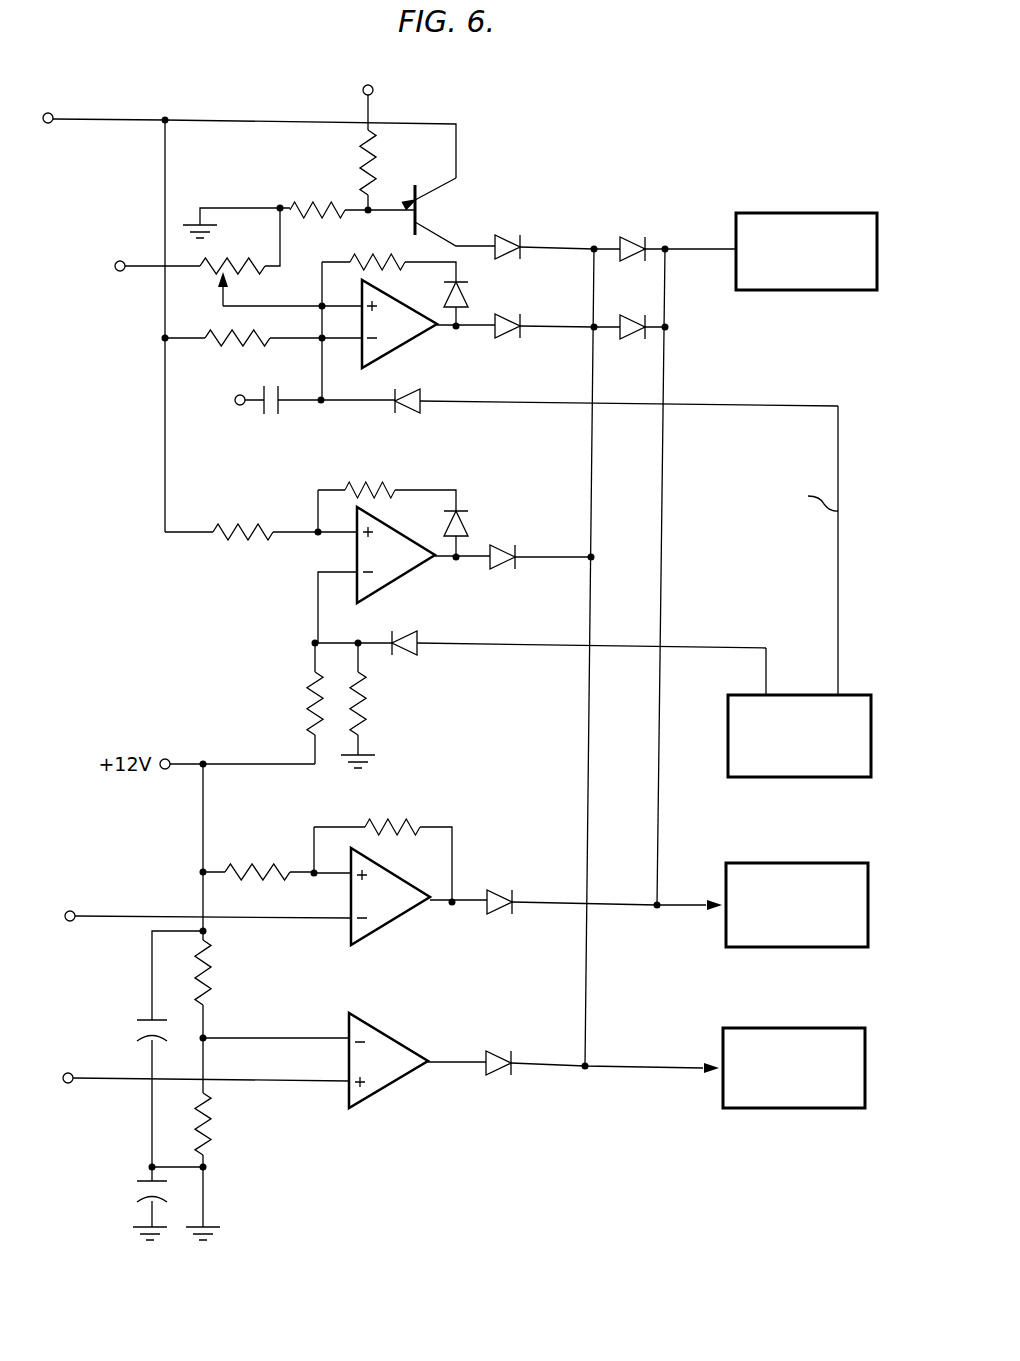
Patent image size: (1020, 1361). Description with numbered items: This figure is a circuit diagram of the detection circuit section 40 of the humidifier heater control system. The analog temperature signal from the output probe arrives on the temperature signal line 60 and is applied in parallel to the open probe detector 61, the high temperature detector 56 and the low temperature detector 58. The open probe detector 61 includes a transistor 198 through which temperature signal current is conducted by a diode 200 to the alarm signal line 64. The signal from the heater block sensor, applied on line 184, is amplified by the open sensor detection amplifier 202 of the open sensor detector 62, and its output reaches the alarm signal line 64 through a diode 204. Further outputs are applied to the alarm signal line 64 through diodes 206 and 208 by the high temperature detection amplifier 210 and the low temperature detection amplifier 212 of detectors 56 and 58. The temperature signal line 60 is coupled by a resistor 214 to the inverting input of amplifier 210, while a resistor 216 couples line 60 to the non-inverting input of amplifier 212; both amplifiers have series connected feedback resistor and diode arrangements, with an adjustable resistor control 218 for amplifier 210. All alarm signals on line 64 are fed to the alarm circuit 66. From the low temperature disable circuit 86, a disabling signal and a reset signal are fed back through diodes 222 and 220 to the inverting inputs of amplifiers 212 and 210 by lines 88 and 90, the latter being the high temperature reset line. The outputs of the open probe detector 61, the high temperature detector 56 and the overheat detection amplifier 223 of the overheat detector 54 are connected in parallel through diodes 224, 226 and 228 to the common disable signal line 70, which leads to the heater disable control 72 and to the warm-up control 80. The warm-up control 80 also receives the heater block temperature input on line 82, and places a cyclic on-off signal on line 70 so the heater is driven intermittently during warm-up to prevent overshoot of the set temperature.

The detection circuit section 40 is at (660, 133).
The overheat detector 54 is at (476, 820).
The high temperature detector 56 is at (463, 364).
The low temperature detector 58 is at (288, 599).
The temperature signal line 60 is at (138, 118).
The open probe detector 61 is at (492, 186).
The open sensor detector 62 is at (466, 1166).
The alarm signal line 64 is at (588, 1027).
The alarm circuit 66 is at (836, 1103).
The disable signal line 70 is at (662, 458).
The heater disable control 72 is at (853, 938).
The warm-up control 80 is at (863, 213).
The temperature input signal line 82 is at (122, 915).
The low temperature disable circuit 86 is at (849, 765).
The disabling signal line 88 is at (745, 648).
The reset signal line 90 is at (748, 404).
The sensor signal line 184 is at (99, 1081).
The transistor 198 is at (432, 219).
The diode 200 is at (506, 258).
The open sensor detection amplifier 202 is at (396, 1070).
The diode 204 is at (500, 1070).
The diode 206 is at (512, 334).
The diode 208 is at (508, 549).
The high temperature detection amplifier 210 is at (420, 340).
The low temperature detection amplifier 212 is at (410, 570).
The resistor 214 is at (226, 331).
The resistor 216 is at (228, 526).
The adjustable resistor control 218 is at (232, 261).
The diode 220 is at (422, 406).
The diode 222 is at (539, 667).
The overheat detection amplifier 223 is at (408, 910).
The diode 224 is at (632, 238).
The diode 226 is at (634, 338).
The diode 228 is at (505, 908).